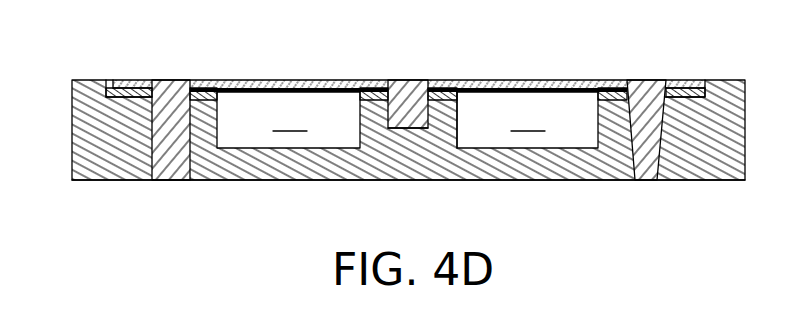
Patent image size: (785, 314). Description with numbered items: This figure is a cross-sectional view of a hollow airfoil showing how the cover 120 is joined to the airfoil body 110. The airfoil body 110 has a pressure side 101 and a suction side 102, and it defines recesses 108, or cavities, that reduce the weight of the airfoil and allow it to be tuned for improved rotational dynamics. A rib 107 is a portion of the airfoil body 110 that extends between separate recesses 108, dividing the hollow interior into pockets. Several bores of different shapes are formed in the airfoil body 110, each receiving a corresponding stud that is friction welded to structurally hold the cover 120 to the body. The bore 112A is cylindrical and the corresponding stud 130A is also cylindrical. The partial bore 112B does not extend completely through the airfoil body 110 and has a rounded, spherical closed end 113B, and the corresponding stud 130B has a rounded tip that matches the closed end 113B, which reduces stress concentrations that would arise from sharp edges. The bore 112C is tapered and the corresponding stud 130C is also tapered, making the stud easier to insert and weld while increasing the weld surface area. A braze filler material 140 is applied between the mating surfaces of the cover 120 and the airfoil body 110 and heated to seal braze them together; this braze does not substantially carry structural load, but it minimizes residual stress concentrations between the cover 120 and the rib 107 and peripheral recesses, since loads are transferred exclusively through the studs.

The pressure side 101 is at (99, 78).
The suction side 102 is at (248, 181).
The rib 107 is at (456, 125).
The recess 108 is at (407, 120).
The airfoil body 110 is at (82, 143).
The bore 112A is at (164, 162).
The partial bore 112B is at (403, 100).
The tapered bore 112C is at (656, 138).
The closed end 113B is at (405, 127).
The cover 120 is at (299, 80).
The stud 130A is at (161, 78).
The stud 130B is at (410, 96).
The tapered stud 130C is at (648, 96).
The braze filler material 140 is at (208, 88).